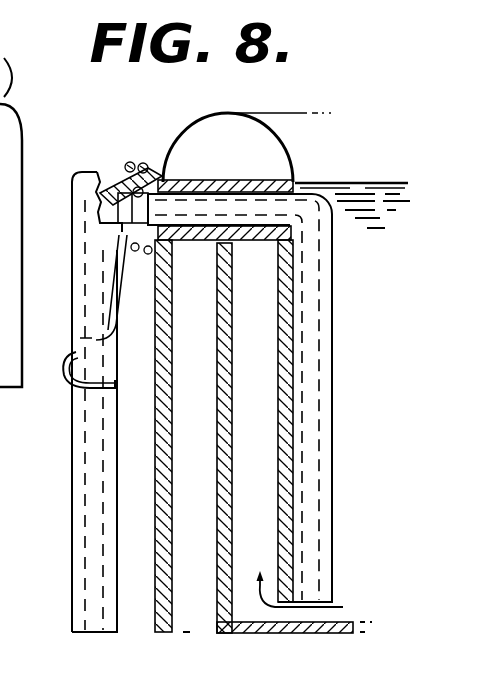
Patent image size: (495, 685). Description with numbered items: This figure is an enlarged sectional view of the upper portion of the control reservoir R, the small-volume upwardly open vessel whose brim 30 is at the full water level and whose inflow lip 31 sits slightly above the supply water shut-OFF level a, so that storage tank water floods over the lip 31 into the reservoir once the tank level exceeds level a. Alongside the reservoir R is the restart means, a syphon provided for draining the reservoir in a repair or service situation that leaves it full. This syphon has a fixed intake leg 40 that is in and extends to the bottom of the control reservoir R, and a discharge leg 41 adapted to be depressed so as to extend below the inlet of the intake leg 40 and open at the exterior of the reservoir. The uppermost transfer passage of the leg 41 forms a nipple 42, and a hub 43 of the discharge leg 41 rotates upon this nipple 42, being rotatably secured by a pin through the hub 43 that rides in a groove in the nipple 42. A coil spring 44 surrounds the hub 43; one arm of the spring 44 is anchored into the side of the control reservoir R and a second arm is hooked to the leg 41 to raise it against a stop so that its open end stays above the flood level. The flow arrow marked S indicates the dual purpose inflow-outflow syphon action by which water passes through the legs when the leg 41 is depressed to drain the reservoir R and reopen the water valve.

The control reservoir R is at (192, 112).
The brim 30 is at (222, 116).
The inflow lip 31 is at (228, 181).
The water level a is at (352, 183).
The fixed intake leg 40 is at (328, 397).
The discharge leg 41 is at (76, 488).
The nipple 42 is at (147, 207).
The hub 43 is at (98, 172).
The coil spring 44 is at (73, 357).
The syphon means S is at (383, 505).